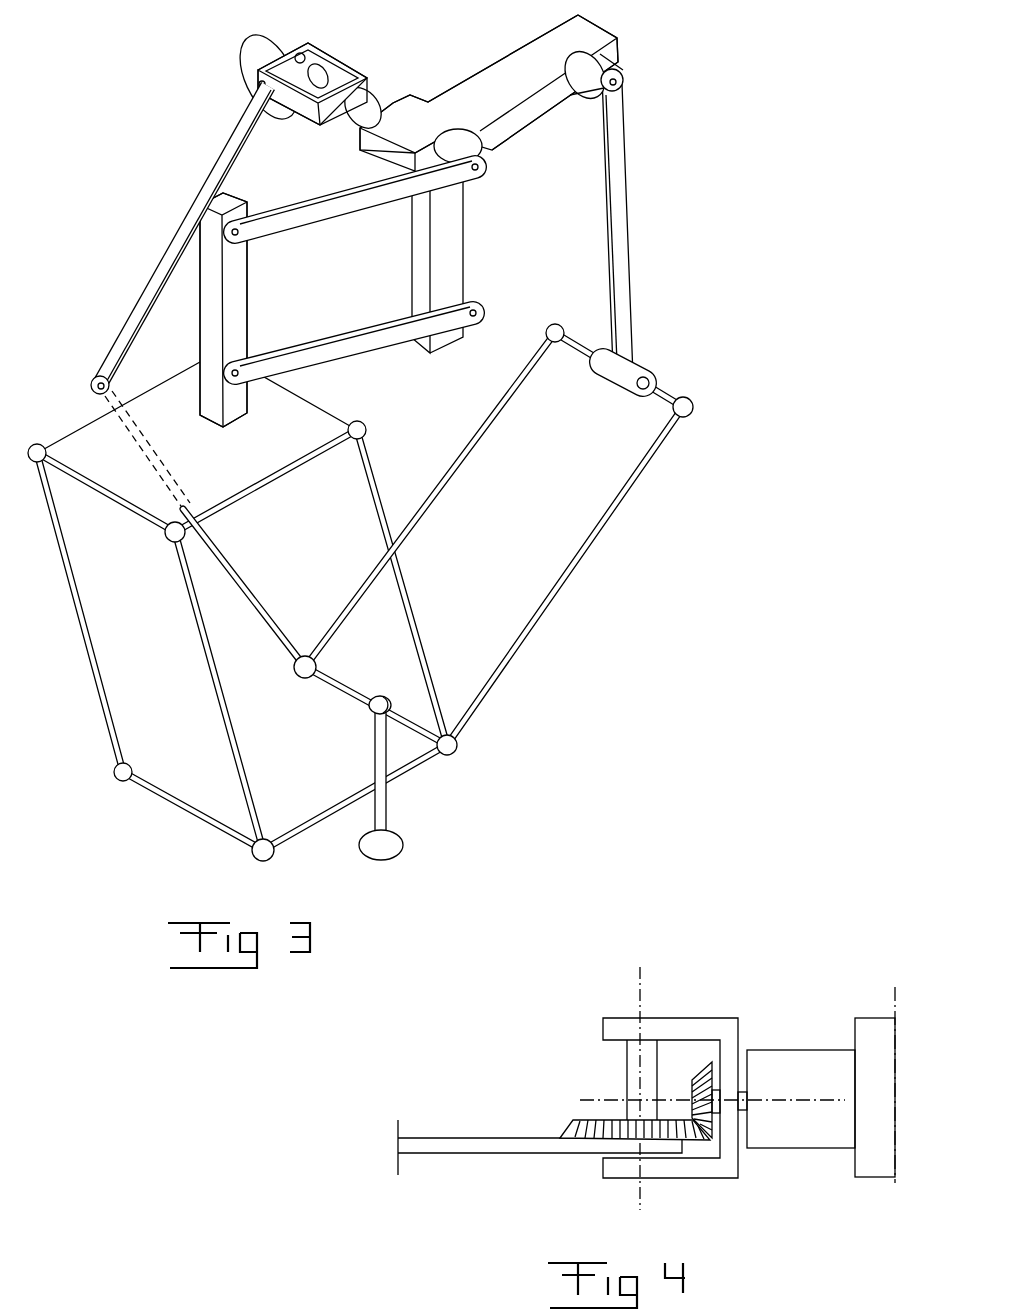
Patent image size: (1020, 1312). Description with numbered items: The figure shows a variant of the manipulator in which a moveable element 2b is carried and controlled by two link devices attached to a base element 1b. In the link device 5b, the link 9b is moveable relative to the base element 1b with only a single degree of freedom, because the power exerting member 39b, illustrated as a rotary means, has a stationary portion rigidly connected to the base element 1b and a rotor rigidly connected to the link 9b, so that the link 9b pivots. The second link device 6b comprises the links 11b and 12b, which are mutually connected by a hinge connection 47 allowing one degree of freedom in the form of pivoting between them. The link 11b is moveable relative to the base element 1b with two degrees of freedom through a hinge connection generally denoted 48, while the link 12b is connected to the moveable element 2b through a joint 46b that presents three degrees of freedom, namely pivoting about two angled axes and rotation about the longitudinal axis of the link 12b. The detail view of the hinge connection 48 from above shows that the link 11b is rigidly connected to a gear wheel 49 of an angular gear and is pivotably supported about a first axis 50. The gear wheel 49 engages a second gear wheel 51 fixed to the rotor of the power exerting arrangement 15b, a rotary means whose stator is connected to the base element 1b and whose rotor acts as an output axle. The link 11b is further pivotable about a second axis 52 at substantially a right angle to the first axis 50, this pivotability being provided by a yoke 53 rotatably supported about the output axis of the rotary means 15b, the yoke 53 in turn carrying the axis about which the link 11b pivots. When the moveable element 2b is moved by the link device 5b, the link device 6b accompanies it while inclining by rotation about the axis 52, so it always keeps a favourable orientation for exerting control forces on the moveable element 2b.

In FIG. 3, the hinge connection 48 is at (352, 50).
In FIG. 3, the base element 1b is at (487, 85).
In FIG. 4, the base element 1b is at (875, 1030).
In FIG. 3, the power exerting member 39b is at (590, 68).
In FIG. 3, the link 9b is at (619, 217).
In FIG. 3, the link 11b is at (167, 257).
In FIG. 4, the link 11b is at (480, 1142).
In FIG. 3, the link device 6b is at (155, 252).
In FIG. 3, the hinge connection 47 is at (88, 397).
In FIG. 3, the link device 5b is at (707, 377).
In FIG. 3, the link 12b is at (247, 587).
In FIG. 3, the joint 46b is at (310, 674).
In FIG. 3, the moveable element 2b is at (188, 803).
In FIG. 4, the second gear wheel 51 is at (694, 1078).
In FIG. 4, the yoke 53 is at (713, 1025).
In FIG. 4, the second axis 52 is at (793, 1095).
In FIG. 4, the gear wheel 49 is at (575, 1122).
In FIG. 4, the power exerting arrangement 15b is at (797, 1128).
In FIG. 4, the first axis 50 is at (638, 1192).